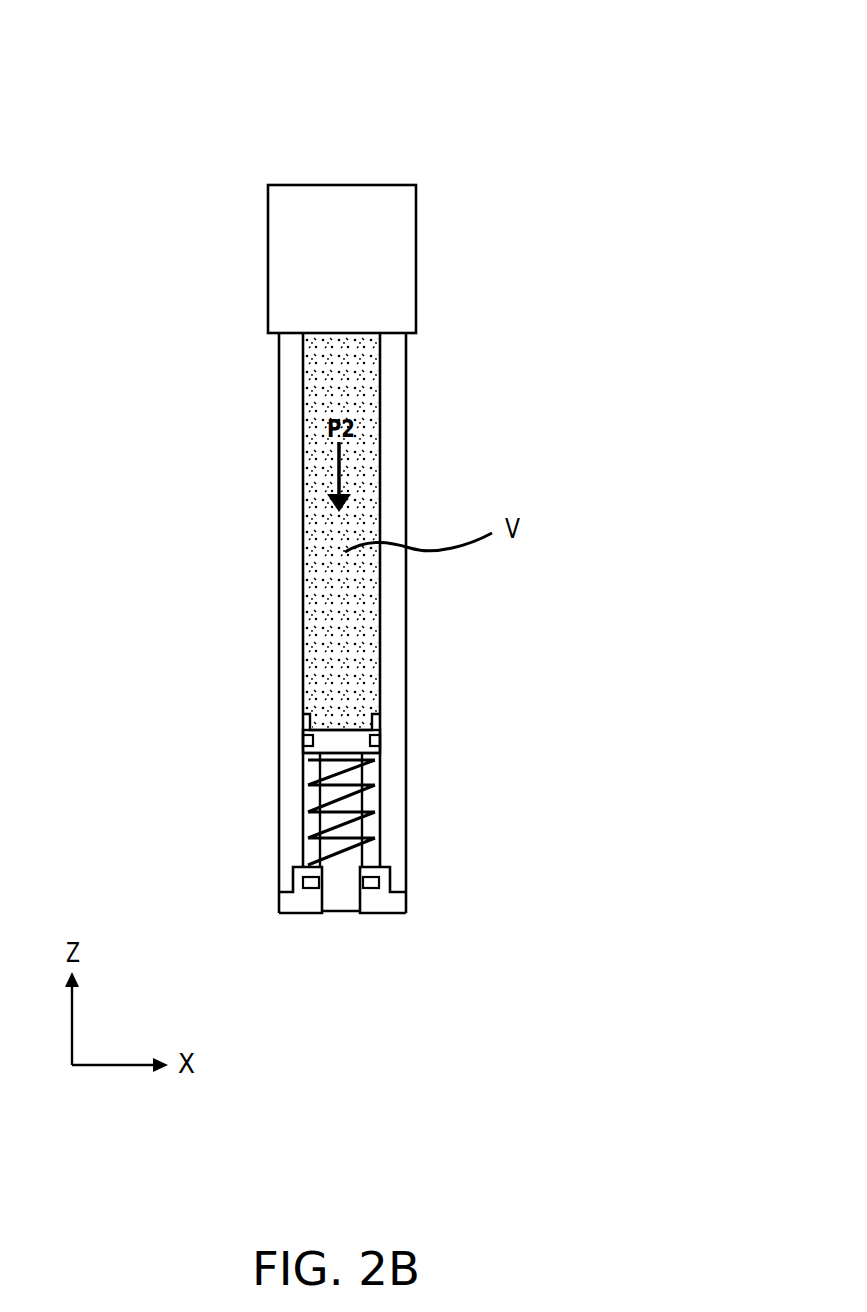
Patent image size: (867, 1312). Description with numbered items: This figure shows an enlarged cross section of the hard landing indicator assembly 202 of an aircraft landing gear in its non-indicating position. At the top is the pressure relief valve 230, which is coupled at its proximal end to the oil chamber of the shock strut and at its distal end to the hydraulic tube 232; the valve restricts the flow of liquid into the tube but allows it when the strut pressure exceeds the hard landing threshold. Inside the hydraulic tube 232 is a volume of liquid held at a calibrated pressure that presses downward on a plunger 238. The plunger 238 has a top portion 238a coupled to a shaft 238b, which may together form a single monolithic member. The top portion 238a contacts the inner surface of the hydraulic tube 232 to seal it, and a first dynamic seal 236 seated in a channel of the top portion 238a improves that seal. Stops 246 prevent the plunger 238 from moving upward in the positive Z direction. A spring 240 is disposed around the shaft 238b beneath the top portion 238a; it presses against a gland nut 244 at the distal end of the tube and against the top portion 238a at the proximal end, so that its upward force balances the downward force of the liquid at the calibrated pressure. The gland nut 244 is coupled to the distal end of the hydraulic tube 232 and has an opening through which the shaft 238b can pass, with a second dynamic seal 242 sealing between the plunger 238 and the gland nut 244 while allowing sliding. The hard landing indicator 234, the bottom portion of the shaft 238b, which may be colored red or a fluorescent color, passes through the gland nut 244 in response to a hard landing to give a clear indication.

The hard landing indicator assembly 202 is at (97, 104).
The pressure relief valve 230 is at (412, 257).
The hydraulic tube 232 is at (402, 430).
The hard landing indicator 234 is at (333, 892).
The first dynamic seal 236 is at (380, 737).
The plunger 238 is at (356, 810).
The top portion 238a is at (335, 737).
The shaft 238b is at (362, 797).
The spring 240 is at (372, 835).
The second dynamic seal 242 is at (378, 889).
The gland nut 244 is at (406, 913).
The stops 246 is at (302, 723).